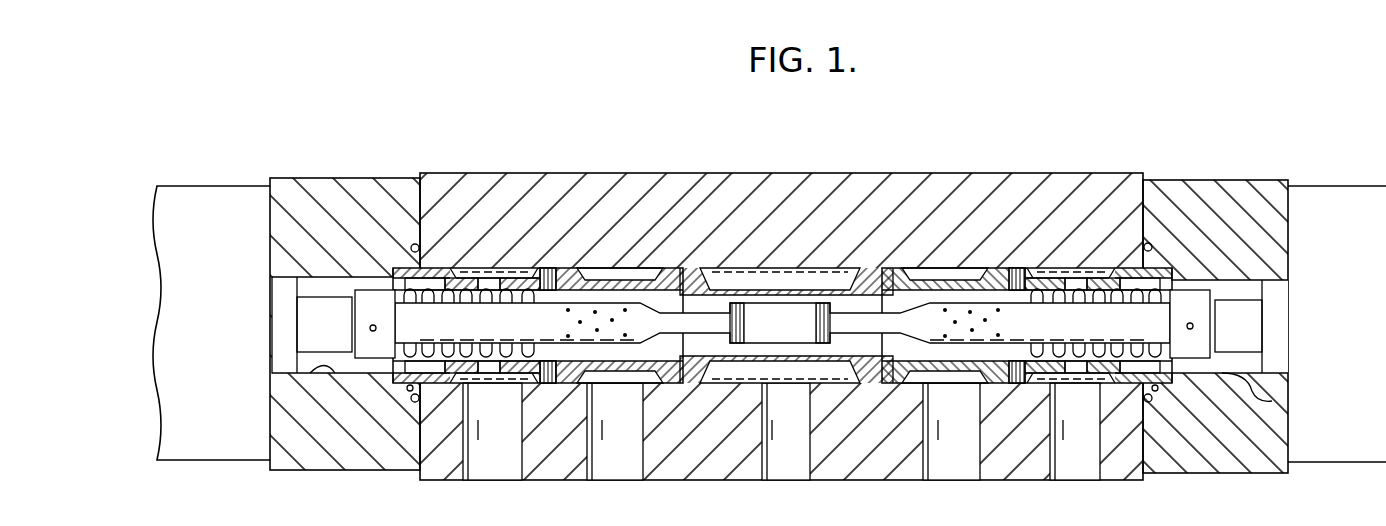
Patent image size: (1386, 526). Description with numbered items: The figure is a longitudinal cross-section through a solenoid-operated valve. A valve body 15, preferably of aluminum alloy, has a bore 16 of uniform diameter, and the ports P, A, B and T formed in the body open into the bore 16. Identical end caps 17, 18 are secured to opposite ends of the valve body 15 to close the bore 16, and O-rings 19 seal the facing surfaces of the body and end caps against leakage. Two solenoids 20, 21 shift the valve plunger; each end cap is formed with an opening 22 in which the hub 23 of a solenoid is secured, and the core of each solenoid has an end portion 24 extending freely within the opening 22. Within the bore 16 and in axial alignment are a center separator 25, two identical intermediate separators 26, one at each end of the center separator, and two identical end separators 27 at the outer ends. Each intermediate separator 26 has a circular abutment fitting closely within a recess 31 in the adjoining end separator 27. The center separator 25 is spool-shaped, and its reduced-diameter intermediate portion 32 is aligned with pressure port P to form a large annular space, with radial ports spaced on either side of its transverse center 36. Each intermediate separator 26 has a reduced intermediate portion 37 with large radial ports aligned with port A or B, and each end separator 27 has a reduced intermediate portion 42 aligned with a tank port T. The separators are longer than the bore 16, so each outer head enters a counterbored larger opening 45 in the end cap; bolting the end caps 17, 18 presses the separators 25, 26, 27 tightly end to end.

The valve body 15 is at (678, 198).
The bore 16 is at (848, 270).
The end cap 17 is at (309, 200).
The end cap 18 is at (1212, 205).
The O-ring 19 is at (413, 244).
The solenoid 20 is at (205, 210).
The solenoid 21 is at (1334, 200).
The opening 22 is at (318, 372).
The hub 23 is at (282, 308).
The end portion 24 is at (313, 330).
The center separator 25 is at (774, 290).
The intermediate separator 26 is at (594, 272).
The end separator 27 is at (513, 270).
The recess 31 is at (912, 513).
The intermediate portion 32 is at (786, 358).
The transverse center 36 is at (819, 512).
The intermediate portion 37 is at (638, 377).
The intermediate portion 42 is at (512, 377).
The larger opening 45 is at (398, 390).